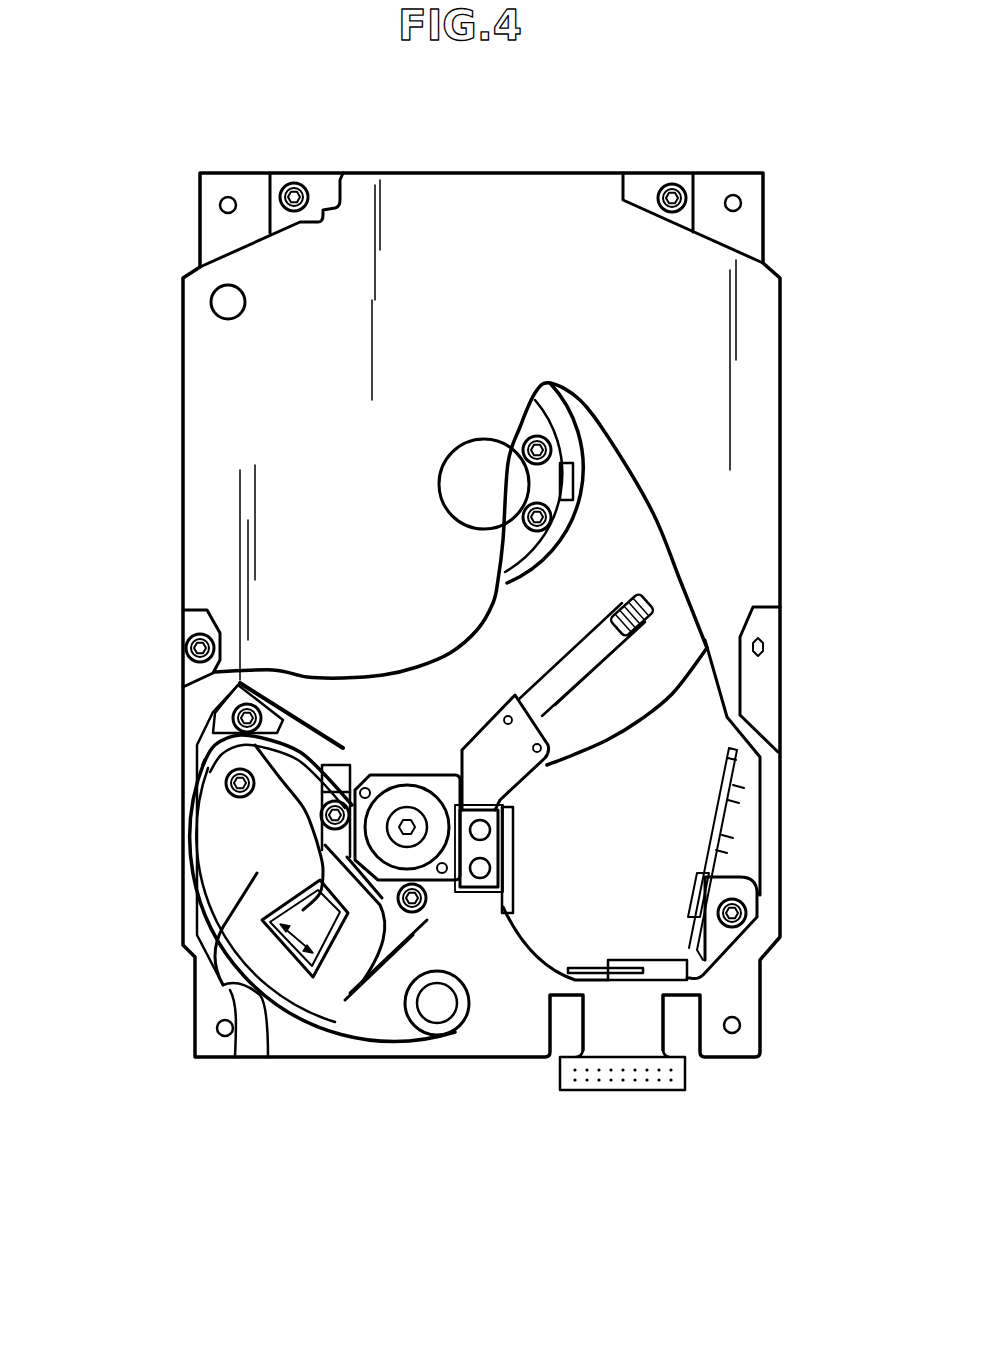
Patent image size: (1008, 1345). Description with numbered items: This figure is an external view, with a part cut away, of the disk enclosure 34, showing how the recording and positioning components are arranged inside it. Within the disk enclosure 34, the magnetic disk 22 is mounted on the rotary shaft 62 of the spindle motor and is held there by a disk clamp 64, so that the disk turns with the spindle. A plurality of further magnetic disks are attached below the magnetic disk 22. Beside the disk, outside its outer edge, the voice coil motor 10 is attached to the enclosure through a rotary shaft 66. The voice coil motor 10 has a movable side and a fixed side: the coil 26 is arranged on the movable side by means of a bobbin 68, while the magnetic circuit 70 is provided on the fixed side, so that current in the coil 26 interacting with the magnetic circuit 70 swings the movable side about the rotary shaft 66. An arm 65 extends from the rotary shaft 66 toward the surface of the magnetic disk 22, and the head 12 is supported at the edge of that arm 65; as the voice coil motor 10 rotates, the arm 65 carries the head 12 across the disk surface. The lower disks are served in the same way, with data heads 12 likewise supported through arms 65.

The voice coil motor 10 is at (185, 792).
The head 12 is at (645, 600).
The magnetic disk 22 is at (650, 678).
The coil 26 is at (288, 1050).
The disk enclosure 34 is at (193, 300).
The rotary shaft of the spindle motor 62 is at (517, 477).
The disk clamp 64 is at (548, 395).
The arm 65 is at (498, 775).
The rotary shaft 66 is at (412, 838).
The bobbin 68 is at (350, 1035).
The magnetic circuit 70 is at (262, 1020).